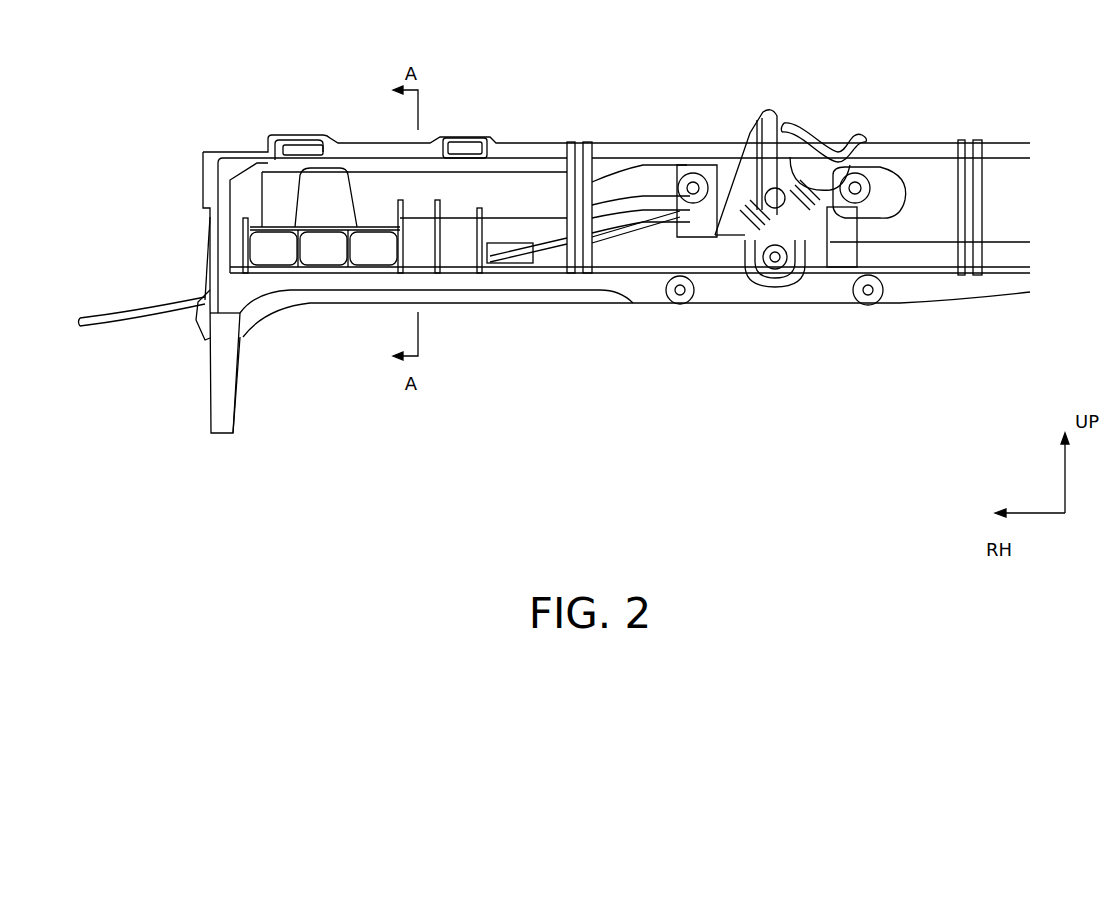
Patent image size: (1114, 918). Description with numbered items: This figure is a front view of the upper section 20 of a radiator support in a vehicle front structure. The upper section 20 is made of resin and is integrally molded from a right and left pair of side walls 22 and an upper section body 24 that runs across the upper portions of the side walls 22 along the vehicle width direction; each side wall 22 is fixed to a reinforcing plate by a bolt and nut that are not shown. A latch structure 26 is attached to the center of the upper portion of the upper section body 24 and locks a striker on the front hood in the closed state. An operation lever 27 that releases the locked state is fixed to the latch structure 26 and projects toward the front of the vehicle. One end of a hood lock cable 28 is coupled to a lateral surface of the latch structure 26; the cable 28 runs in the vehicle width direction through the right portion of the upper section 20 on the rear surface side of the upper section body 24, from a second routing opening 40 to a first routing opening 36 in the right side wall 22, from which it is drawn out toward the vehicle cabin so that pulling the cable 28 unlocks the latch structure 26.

The upper section 20 is at (303, 115).
The side wall 22 is at (217, 365).
The upper section body 24 is at (490, 135).
The latch structure 26 is at (770, 100).
The operation lever 27 is at (835, 110).
The hood lock cable 28 is at (120, 308).
The first routing opening 36 is at (200, 290).
The second routing opening 40 is at (500, 243).